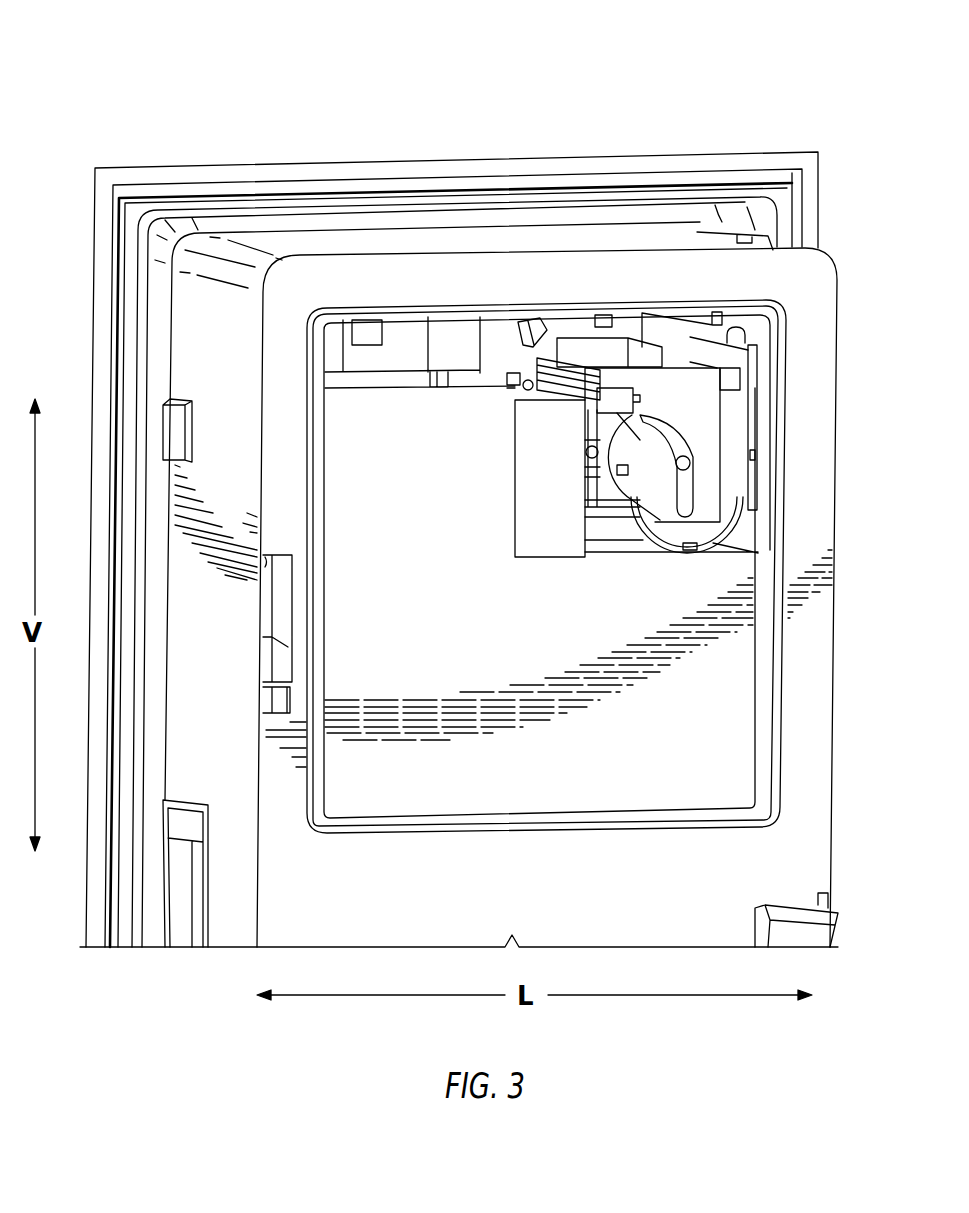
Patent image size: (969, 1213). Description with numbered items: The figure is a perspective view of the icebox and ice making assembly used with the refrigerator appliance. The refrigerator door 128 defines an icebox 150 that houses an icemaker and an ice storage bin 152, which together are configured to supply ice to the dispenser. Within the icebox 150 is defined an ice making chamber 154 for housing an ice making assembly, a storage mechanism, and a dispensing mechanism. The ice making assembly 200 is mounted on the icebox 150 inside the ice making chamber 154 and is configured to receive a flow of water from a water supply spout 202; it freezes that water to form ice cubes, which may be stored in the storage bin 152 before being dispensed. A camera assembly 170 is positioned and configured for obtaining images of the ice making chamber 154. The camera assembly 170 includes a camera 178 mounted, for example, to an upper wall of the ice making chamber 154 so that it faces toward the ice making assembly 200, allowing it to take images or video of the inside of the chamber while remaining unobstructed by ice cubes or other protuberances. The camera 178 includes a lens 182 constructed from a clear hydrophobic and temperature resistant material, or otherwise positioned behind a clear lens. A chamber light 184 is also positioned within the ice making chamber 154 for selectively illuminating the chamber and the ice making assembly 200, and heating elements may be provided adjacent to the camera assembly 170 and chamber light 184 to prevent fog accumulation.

The refrigerator door 128 is at (771, 66).
The icebox 150 is at (430, 307).
The ice storage bin 152 is at (530, 648).
The ice making chamber 154 is at (498, 330).
The camera assembly 170 is at (544, 190).
The camera 178 is at (534, 318).
The lens 182 is at (548, 338).
The chamber light 184 is at (357, 320).
The ice making assembly 200 is at (701, 405).
The water supply spout 202 is at (603, 312).